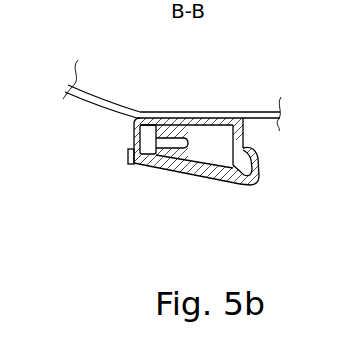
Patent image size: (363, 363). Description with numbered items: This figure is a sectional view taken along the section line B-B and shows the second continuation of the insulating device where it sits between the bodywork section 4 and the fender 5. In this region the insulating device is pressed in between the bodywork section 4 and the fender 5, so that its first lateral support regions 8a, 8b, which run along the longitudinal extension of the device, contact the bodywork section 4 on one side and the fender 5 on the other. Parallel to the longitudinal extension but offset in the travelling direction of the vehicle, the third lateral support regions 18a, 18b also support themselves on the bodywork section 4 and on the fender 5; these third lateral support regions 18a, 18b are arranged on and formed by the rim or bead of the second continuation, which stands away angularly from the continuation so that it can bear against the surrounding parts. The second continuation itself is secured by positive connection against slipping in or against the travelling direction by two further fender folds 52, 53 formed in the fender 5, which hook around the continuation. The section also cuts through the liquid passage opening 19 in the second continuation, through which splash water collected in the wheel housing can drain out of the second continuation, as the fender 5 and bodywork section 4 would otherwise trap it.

The bodywork section 4 is at (123, 105).
The fender 5 is at (203, 175).
The first lateral support region 8a is at (243, 112).
The first lateral support region 8b is at (239, 182).
The third lateral support region 18a is at (140, 109).
The third lateral support region 18b is at (143, 167).
The liquid passage opening 19 is at (150, 142).
The fender fold 52 is at (262, 168).
The fender fold 53 is at (128, 160).